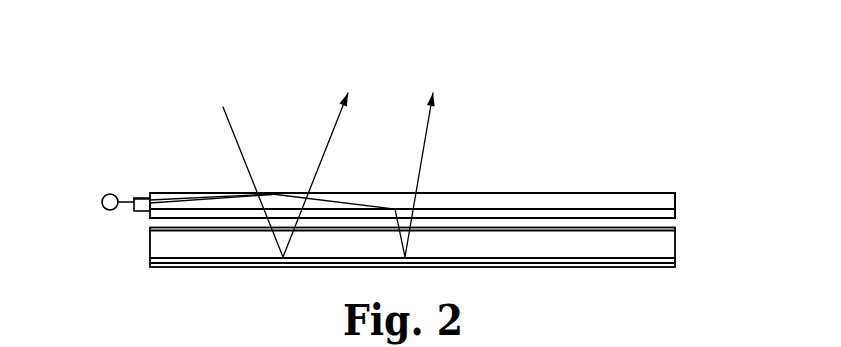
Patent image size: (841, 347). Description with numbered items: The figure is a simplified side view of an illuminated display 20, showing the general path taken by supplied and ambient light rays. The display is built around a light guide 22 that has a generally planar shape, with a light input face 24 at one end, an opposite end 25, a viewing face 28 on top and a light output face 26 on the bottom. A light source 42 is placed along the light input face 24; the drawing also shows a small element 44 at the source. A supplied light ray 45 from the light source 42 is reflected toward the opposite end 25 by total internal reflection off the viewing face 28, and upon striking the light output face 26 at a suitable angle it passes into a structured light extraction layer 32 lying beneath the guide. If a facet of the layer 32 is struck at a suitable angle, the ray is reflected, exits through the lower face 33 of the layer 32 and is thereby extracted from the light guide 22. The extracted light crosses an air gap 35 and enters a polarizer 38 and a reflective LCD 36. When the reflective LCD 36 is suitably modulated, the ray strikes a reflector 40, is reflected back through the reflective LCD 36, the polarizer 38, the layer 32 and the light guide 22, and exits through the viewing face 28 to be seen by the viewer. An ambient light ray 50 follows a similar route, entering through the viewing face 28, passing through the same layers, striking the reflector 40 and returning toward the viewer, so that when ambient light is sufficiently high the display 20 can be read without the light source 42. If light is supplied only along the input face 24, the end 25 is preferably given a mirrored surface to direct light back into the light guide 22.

The illuminated display 20 is at (606, 97).
The light guide 22 is at (625, 202).
The light input face 24 is at (147, 197).
The opposite end 25 is at (676, 204).
The light output face 26 is at (530, 208).
The viewing face 28 is at (473, 193).
The structured light extraction layer 32 is at (570, 215).
The lower face 33 is at (598, 220).
The air gap 35 is at (517, 222).
The reflective LCD 36 is at (158, 245).
The polarizer 38 is at (662, 230).
The reflector 40 is at (155, 262).
The light source 42 is at (104, 208).
The light emitting diode 44 is at (137, 198).
The supplied light ray 45 is at (425, 143).
The ambient light ray 50 is at (222, 107).